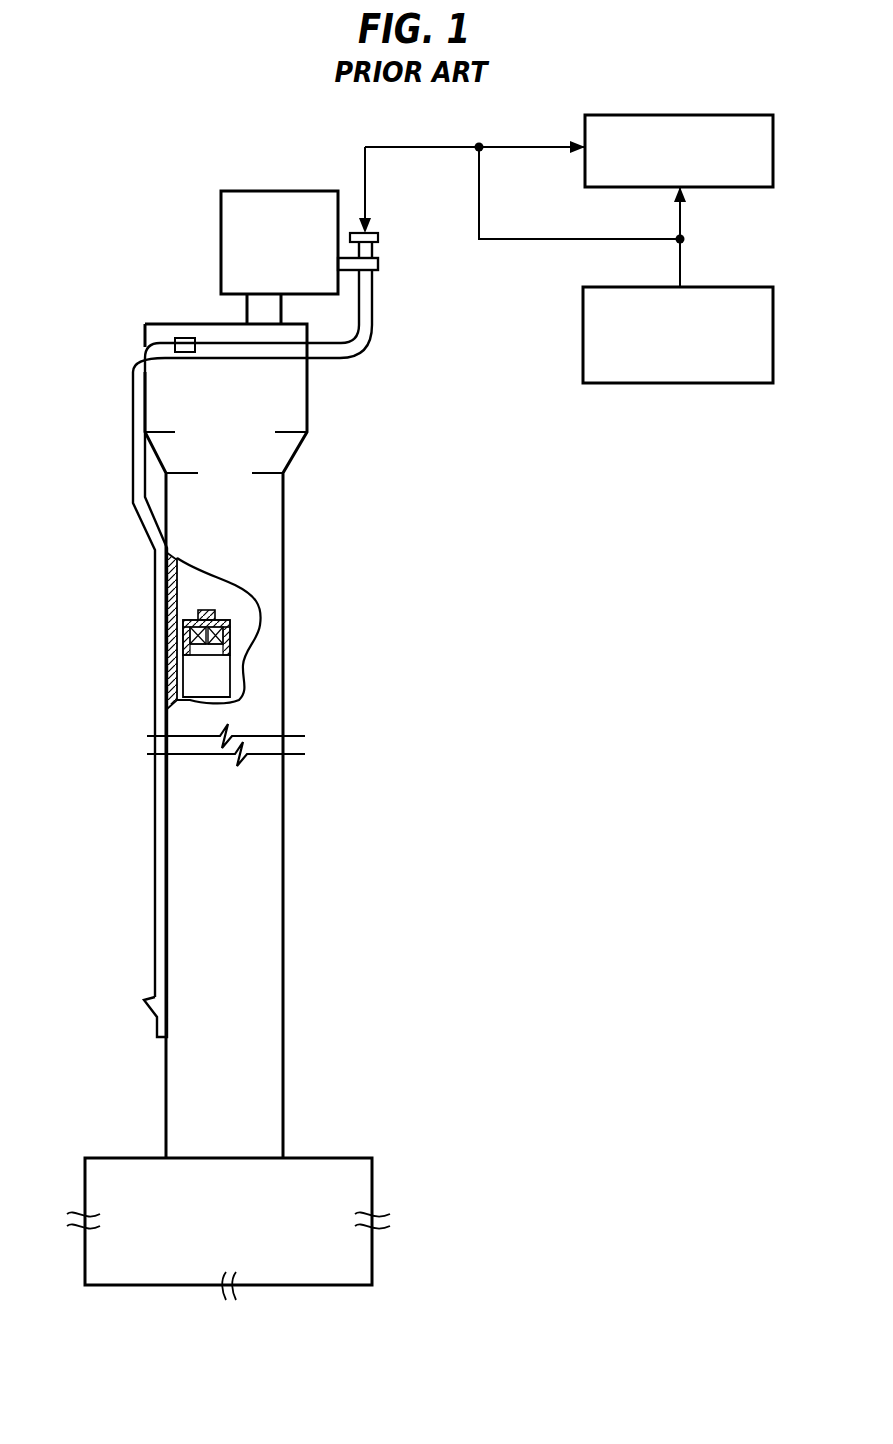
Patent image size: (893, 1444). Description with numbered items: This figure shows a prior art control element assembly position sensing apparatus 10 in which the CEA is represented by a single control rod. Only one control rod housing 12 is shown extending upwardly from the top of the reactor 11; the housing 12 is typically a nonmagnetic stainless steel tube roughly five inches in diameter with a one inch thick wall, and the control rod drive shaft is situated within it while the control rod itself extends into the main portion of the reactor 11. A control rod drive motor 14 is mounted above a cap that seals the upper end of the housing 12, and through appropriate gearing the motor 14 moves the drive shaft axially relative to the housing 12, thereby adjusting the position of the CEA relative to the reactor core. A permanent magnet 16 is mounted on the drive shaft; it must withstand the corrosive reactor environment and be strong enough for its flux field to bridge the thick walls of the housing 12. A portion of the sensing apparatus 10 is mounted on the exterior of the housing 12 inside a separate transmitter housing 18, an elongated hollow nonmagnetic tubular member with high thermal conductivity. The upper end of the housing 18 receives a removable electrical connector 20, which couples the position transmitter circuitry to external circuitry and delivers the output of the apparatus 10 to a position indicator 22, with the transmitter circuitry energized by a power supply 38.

The CEA position sensing apparatus 10 is at (185, 156).
The reactor 11 is at (327, 1158).
The control rod housing 12 is at (286, 887).
The control rod drive motor 14 is at (221, 230).
The permanent magnet 16 is at (230, 645).
The transmitter housing 18 is at (155, 670).
The electrical connector 20 is at (378, 237).
The position indicator 22 is at (720, 115).
The power supply 38 is at (718, 287).